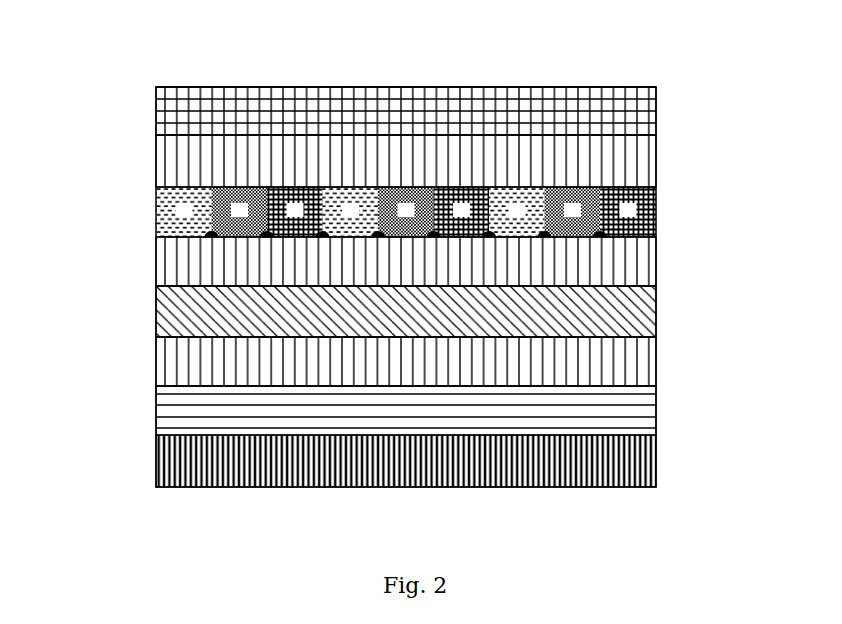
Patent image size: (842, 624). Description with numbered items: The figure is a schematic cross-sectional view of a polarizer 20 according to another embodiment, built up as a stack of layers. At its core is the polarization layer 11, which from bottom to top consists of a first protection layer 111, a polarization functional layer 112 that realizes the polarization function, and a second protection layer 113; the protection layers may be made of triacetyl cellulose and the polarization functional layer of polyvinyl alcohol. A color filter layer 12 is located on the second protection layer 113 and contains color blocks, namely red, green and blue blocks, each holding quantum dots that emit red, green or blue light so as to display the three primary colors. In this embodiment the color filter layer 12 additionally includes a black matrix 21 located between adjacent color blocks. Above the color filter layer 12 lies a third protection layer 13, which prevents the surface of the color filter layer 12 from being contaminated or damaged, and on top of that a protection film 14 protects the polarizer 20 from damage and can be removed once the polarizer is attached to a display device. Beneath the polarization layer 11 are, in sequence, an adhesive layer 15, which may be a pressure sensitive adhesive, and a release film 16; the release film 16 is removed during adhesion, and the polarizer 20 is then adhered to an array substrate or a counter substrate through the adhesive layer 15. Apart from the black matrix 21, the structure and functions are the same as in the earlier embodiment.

The polarizer 20 is at (50, 73).
The black matrix 21 is at (265, 233).
The protection film 14 is at (656, 113).
The third protection layer 13 is at (656, 162).
The color filter layer 12 is at (656, 212).
The polarization layer 11 is at (414, 311).
The second protection layer 113 is at (656, 262).
The polarization functional layer 112 is at (656, 311).
The first protection layer 111 is at (656, 362).
The adhesive layer 15 is at (656, 412).
The release film 16 is at (656, 462).